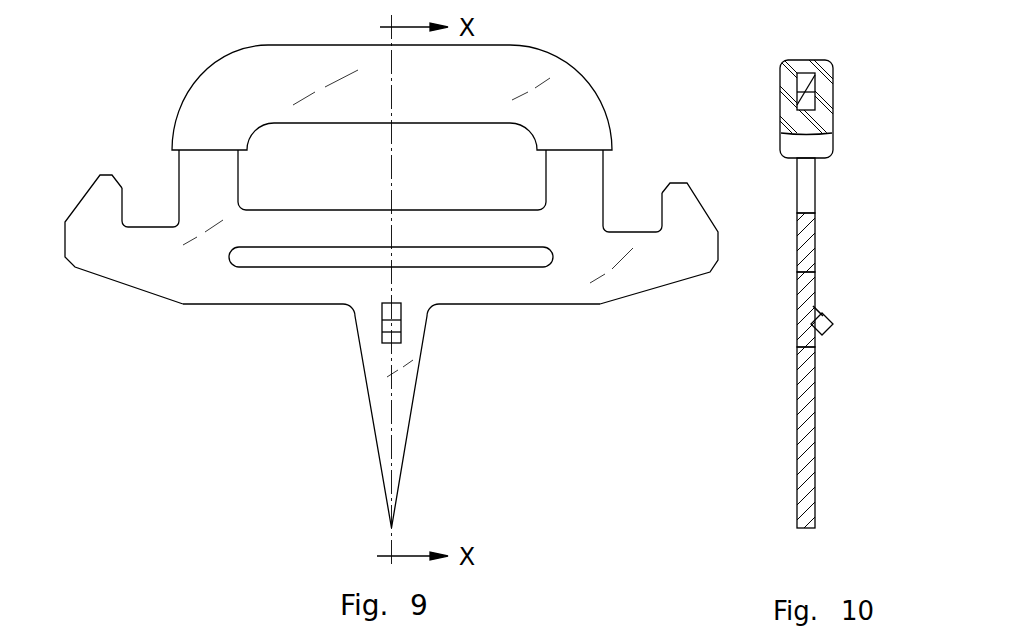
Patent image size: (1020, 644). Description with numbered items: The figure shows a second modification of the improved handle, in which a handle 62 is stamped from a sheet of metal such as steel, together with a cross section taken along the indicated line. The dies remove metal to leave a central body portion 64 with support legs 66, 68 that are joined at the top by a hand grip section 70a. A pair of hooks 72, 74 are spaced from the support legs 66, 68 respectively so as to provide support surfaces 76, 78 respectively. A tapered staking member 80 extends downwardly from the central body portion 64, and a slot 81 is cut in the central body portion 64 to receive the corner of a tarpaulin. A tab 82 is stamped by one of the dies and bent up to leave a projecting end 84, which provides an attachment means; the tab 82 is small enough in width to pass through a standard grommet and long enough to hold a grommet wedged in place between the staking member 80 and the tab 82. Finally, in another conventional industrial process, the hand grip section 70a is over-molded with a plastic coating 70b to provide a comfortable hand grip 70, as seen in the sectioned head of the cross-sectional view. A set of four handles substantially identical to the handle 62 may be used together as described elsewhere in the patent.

In FIG. 9, the handle 62 is at (578, 58).
In FIG. 9, the central body portion 64 is at (456, 210).
In FIG. 9, the support leg 66 is at (239, 183).
In FIG. 9, the support leg 68 is at (546, 182).
In FIG. 10, the support leg 68 is at (797, 191).
In FIG. 9, the hand grip 70 is at (323, 45).
In FIG. 10, the hand grip section 70a is at (800, 89).
In FIG. 10, the plastic coating 70b is at (832, 78).
In FIG. 9, the hook 72 is at (68, 220).
In FIG. 9, the hook 74 is at (692, 190).
In FIG. 9, the support surface 76 is at (154, 226).
In FIG. 9, the support surface 78 is at (632, 230).
In FIG. 9, the tapered staking member 80 is at (373, 438).
In FIG. 10, the tapered staking member 80 is at (815, 466).
In FIG. 9, the slot 81 is at (297, 256).
In FIG. 10, the slot 81 is at (806, 250).
In FIG. 9, the tab 82 is at (383, 318).
In FIG. 10, the tab 82 is at (798, 327).
In FIG. 10, the projecting end 84 is at (845, 306).